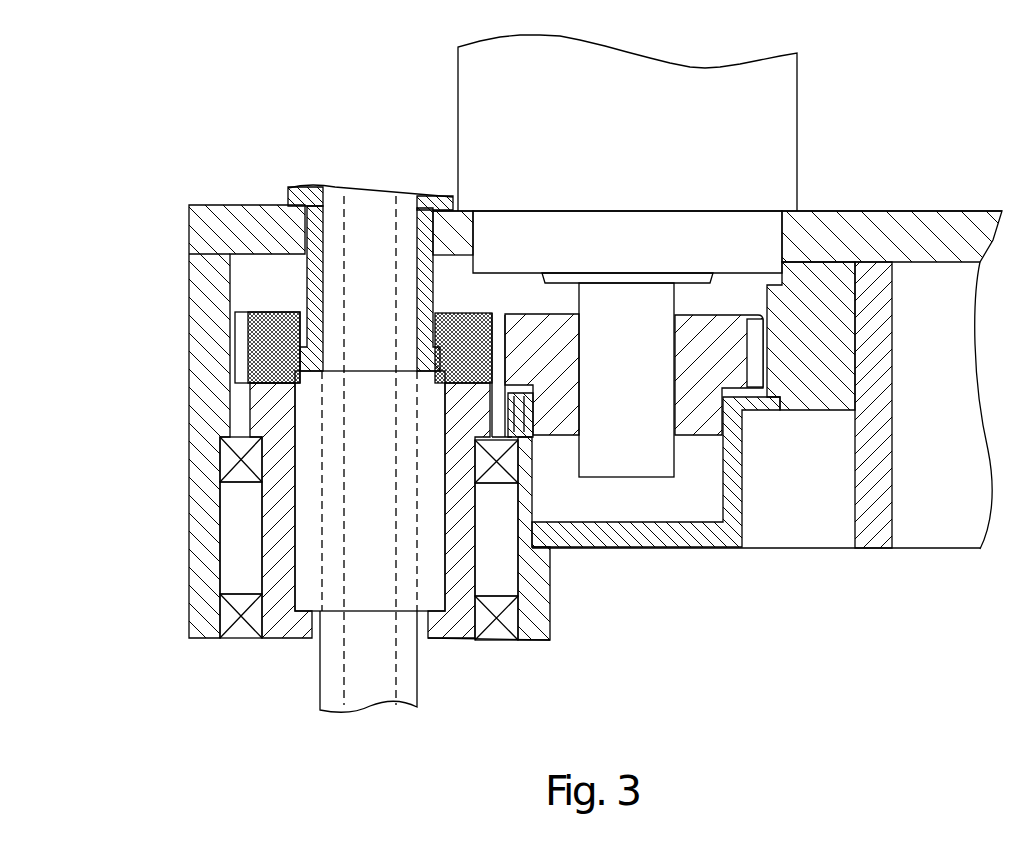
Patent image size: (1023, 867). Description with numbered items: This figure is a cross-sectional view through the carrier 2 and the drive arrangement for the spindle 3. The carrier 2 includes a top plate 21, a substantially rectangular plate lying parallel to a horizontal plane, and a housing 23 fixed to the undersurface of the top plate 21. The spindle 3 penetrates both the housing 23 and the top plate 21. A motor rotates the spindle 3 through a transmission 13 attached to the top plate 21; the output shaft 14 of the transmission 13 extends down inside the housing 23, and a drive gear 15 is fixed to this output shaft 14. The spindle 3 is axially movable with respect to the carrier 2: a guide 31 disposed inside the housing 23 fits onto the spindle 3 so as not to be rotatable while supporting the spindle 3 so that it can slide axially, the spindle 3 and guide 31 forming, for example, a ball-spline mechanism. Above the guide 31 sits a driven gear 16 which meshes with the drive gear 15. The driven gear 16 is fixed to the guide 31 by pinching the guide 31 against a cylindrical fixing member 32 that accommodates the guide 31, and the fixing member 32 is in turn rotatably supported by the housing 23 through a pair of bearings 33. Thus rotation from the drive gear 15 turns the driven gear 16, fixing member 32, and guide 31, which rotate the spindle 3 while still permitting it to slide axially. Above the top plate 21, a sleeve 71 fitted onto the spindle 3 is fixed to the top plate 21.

The carrier 2 is at (935, 548).
The spindle 3 is at (376, 208).
The transmission 13 is at (783, 108).
The output shaft 14 is at (620, 445).
The drive gear 15 is at (705, 420).
The driven gear 16 is at (247, 350).
The top plate 21 is at (932, 211).
The housing 23 is at (800, 400).
The guide 31 is at (377, 592).
The fixing member 32 is at (453, 640).
The bearings 33 is at (222, 460).
The sleeve 71 is at (310, 187).